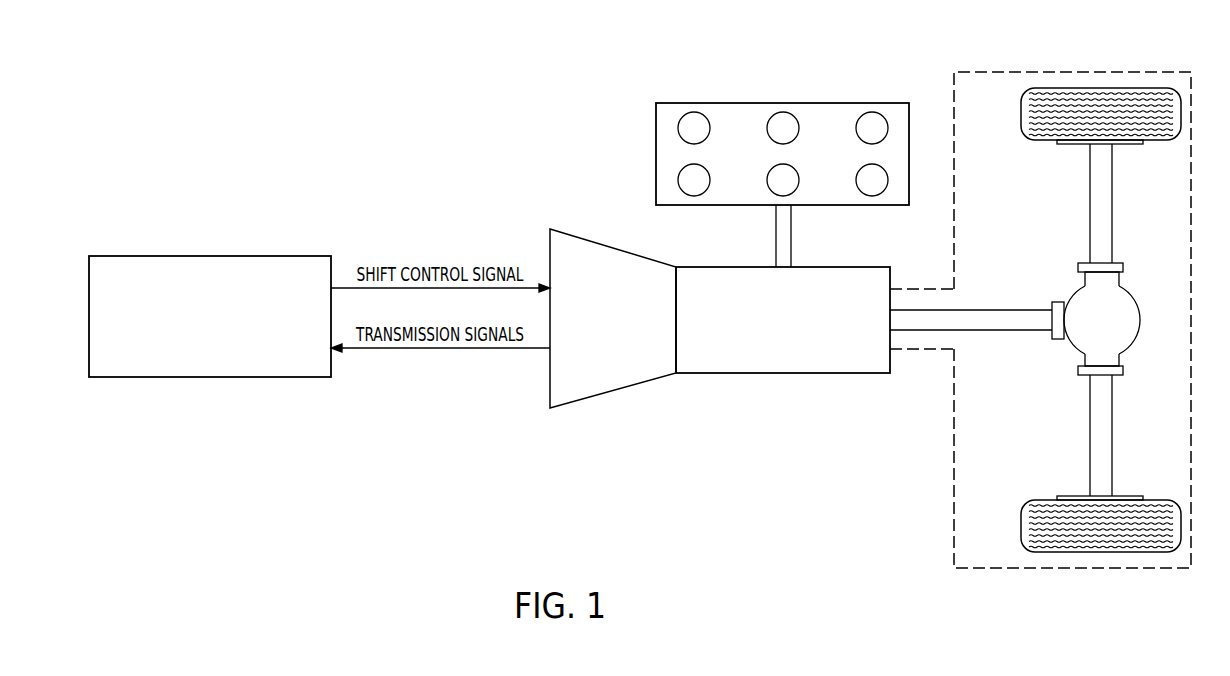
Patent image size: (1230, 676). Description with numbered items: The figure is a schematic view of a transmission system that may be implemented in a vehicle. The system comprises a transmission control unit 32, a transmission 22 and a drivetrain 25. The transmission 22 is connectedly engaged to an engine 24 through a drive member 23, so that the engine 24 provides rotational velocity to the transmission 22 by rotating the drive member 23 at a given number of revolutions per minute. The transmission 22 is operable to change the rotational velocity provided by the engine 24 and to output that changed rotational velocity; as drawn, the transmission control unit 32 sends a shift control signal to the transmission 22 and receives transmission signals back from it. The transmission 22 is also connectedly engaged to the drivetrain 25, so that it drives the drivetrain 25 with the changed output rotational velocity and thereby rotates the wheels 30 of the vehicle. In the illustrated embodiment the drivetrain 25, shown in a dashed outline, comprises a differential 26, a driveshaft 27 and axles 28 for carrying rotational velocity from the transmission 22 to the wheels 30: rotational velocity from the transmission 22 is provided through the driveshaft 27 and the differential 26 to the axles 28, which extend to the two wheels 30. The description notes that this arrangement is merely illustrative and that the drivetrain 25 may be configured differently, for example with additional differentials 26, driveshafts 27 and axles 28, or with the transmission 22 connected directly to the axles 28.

The transmission 22 is at (782, 375).
The drive member 23 is at (792, 236).
The engine 24 is at (783, 103).
The drivetrain 25 is at (1000, 72).
The differential 26 is at (1139, 280).
The driveshaft 27 is at (1003, 310).
The axles 28 is at (1089, 203).
The wheels 30 is at (1021, 114).
The transmission control unit 32 is at (210, 378).